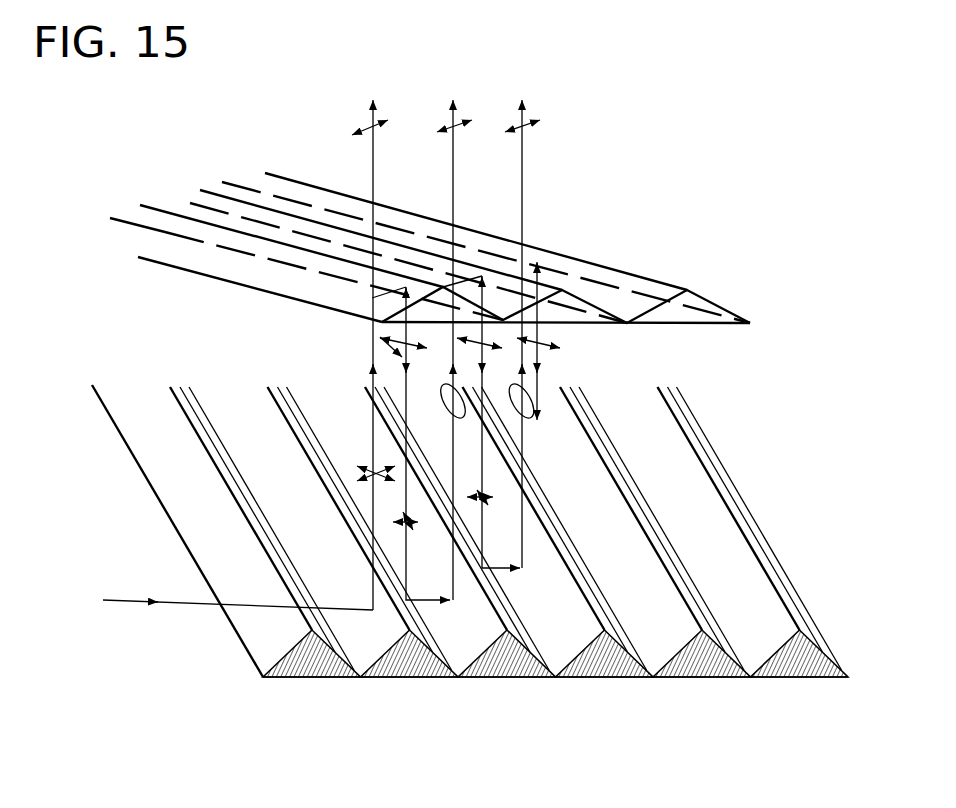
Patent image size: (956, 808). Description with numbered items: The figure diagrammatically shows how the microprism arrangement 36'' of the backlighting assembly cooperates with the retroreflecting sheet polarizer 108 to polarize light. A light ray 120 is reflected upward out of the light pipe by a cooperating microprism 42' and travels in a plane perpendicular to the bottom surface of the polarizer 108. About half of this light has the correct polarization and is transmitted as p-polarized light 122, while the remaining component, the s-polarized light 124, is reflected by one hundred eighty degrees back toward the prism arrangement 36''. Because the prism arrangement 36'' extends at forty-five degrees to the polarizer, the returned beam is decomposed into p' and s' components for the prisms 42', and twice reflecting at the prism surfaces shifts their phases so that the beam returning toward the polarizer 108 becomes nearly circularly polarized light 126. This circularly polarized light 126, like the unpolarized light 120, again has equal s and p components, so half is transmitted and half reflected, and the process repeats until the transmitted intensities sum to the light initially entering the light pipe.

The retroreflecting sheet polarizer 108 is at (653, 265).
The light ray 120 is at (368, 422).
The p-polarized light 122 is at (370, 112).
The s-polarized light 124 is at (380, 337).
The circularly polarized light 126 is at (458, 583).
The microprism 42' is at (511, 528).
The microprism arrangement 36'' is at (528, 724).